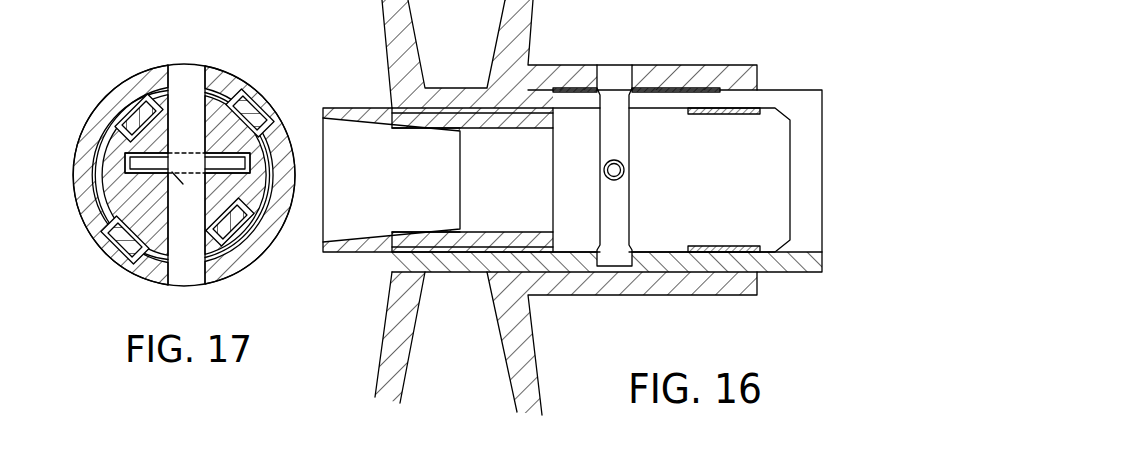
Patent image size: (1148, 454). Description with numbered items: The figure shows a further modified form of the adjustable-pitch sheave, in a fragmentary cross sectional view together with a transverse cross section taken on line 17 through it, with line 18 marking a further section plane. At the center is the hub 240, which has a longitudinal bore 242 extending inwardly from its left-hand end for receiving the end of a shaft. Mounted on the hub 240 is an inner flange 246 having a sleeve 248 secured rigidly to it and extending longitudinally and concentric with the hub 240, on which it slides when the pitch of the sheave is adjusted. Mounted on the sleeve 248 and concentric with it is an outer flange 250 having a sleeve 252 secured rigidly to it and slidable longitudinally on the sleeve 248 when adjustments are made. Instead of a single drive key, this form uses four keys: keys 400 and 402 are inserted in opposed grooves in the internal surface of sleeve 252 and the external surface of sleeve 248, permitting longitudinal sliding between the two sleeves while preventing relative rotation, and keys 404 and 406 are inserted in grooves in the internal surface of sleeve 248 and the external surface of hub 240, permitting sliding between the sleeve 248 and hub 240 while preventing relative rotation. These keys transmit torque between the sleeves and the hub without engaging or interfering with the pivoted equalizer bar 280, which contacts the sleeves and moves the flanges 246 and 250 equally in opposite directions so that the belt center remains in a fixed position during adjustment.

In FIG. 16, the section line 17— 17 is at (617, 37).
In FIG. 17, the section line 18— 18 is at (103, 85).
In FIG. 16, the hub 240 is at (453, 115).
In FIG. 17, the hub 240 is at (123, 203).
In FIG. 16, the longitudinal bore 242 is at (333, 226).
In FIG. 16, the inner flange 246 is at (387, 38).
In FIG. 16, the sleeve 248 is at (448, 266).
In FIG. 17, the sleeve 248 is at (197, 262).
In FIG. 16, the outer flange 250 is at (502, 23).
In FIG. 16, the sleeve 252 is at (584, 50).
In FIG. 17, the sleeve 252 is at (281, 132).
In FIG. 16, the equalizer bar 280 is at (626, 207).
In FIG. 17, the equalizer bar 280 is at (196, 215).
In FIG. 17, the key 400 is at (252, 110).
In FIG. 17, the key 402 is at (130, 250).
In FIG. 17, the key 404 is at (125, 132).
In FIG. 17, the key 406 is at (245, 252).